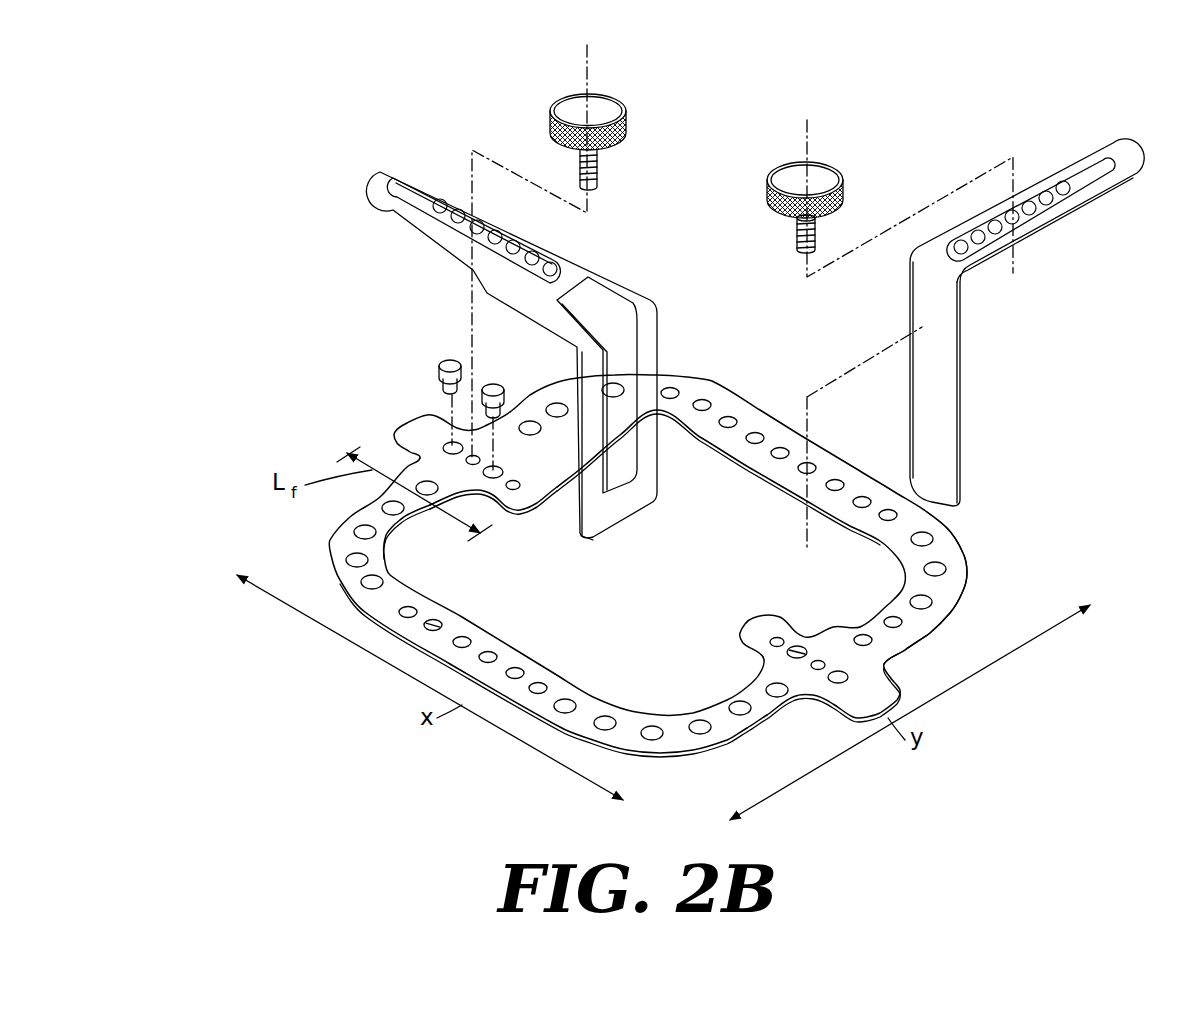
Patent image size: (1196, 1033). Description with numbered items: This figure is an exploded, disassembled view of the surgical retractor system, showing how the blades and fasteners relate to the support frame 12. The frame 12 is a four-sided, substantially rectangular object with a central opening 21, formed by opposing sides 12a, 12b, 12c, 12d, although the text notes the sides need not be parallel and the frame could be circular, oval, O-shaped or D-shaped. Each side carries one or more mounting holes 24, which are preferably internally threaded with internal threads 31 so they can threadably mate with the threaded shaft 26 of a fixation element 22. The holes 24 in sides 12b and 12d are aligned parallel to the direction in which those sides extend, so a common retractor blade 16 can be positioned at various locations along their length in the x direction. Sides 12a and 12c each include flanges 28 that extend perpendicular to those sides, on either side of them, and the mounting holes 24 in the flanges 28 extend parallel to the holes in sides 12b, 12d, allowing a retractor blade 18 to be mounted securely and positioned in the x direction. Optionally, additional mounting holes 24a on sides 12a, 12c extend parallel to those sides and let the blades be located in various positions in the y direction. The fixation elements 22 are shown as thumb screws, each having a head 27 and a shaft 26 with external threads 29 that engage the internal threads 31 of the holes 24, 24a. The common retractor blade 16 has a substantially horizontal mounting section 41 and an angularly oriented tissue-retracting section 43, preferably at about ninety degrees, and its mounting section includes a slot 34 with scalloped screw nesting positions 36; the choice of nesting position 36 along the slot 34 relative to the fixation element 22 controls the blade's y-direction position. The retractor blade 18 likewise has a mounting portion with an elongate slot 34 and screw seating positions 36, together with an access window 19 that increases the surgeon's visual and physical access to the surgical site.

The frame 12 is at (967, 548).
The side of frame 12a is at (328, 548).
The side of frame 12b is at (707, 385).
The side of frame 12c is at (775, 730).
The side of frame 12d is at (400, 650).
The common retractor blade 16 is at (1128, 152).
The retractor blade 18 is at (395, 224).
The access window 19 is at (603, 312).
The central opening 21 is at (652, 634).
The fixation element 22 is at (618, 102).
The mounting hole 24 is at (452, 446).
The additional mounting hole 24a is at (553, 405).
The threaded shaft 26 is at (600, 166).
The head 27 is at (845, 196).
The flange 28 is at (433, 425).
The external threads 29 is at (816, 228).
The internal threads 31 is at (437, 622).
The slot 34 is at (400, 186).
The screw nesting positions 36 is at (452, 207).
The mounting section 41 is at (1075, 215).
The tissue-retracting section 43 is at (938, 390).